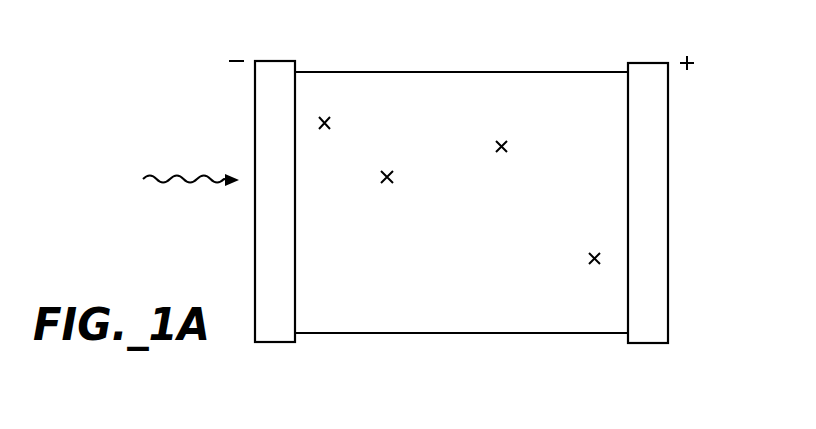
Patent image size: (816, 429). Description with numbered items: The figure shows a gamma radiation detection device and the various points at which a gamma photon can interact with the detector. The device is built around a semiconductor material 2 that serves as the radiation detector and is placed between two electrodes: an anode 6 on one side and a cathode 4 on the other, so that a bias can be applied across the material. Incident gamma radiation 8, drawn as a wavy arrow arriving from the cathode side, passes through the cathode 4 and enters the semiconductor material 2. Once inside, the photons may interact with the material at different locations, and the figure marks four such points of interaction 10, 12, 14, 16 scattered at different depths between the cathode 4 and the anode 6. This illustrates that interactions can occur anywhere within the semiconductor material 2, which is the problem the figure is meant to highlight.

The semiconductor material 2 is at (450, 78).
The cathode electrode 4 is at (273, 60).
The anode electrode 6 is at (648, 62).
The incident γ radiation 8 is at (172, 183).
The point of interaction 10 is at (340, 123).
The point of interaction 12 is at (404, 176).
The point of interaction 14 is at (518, 145).
The point of interaction 16 is at (576, 257).